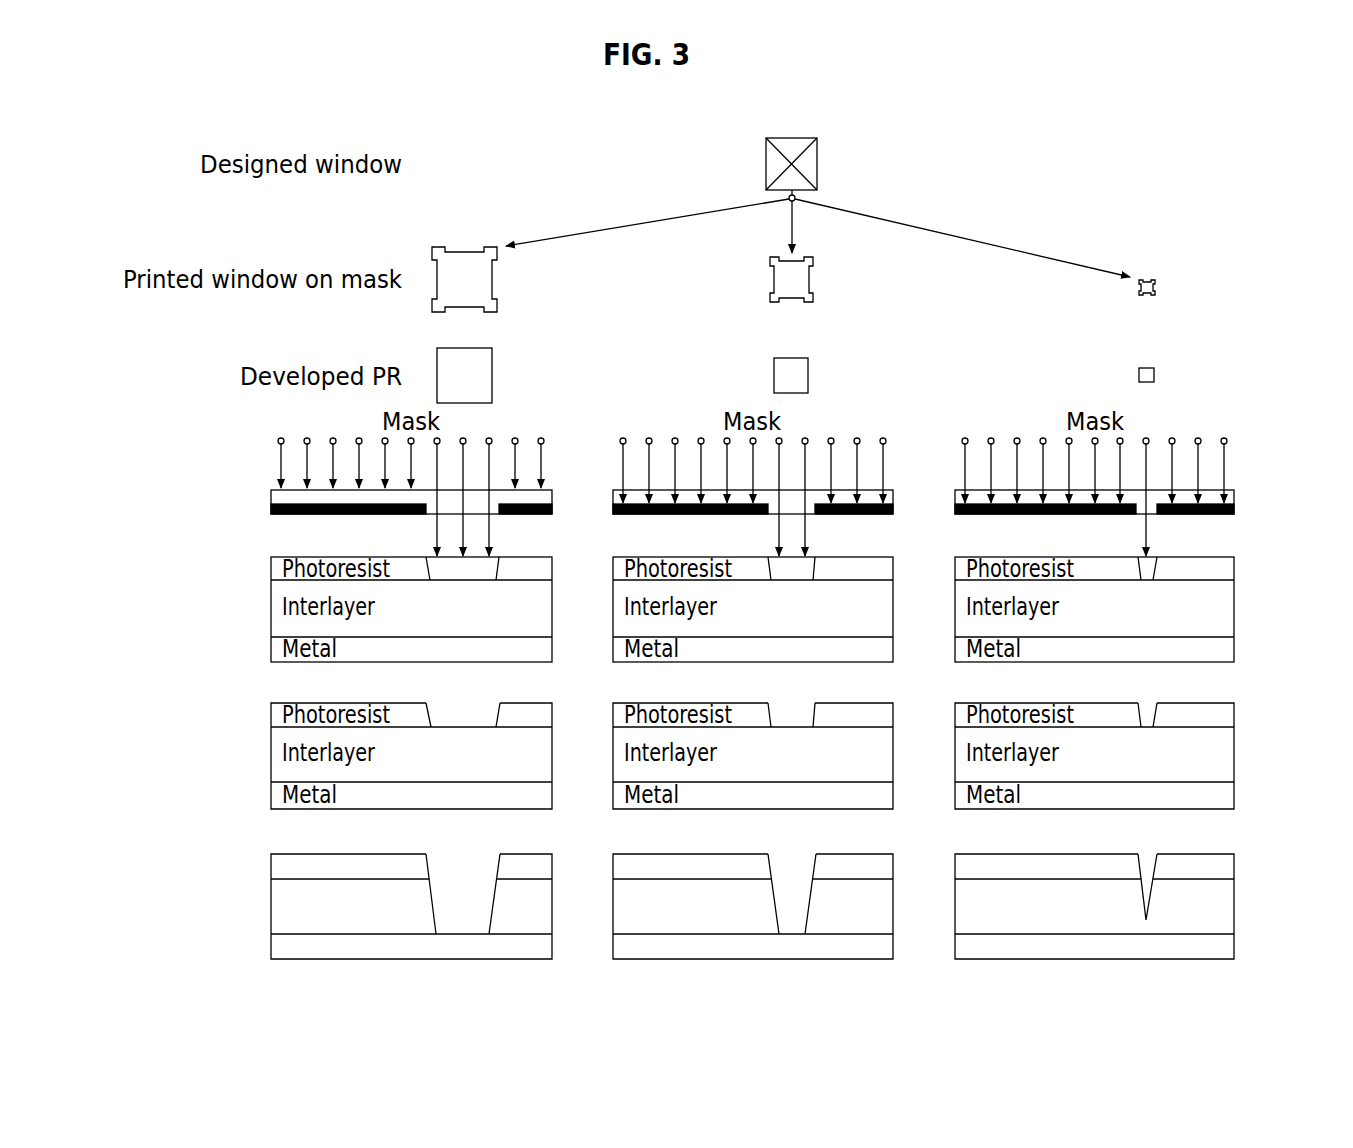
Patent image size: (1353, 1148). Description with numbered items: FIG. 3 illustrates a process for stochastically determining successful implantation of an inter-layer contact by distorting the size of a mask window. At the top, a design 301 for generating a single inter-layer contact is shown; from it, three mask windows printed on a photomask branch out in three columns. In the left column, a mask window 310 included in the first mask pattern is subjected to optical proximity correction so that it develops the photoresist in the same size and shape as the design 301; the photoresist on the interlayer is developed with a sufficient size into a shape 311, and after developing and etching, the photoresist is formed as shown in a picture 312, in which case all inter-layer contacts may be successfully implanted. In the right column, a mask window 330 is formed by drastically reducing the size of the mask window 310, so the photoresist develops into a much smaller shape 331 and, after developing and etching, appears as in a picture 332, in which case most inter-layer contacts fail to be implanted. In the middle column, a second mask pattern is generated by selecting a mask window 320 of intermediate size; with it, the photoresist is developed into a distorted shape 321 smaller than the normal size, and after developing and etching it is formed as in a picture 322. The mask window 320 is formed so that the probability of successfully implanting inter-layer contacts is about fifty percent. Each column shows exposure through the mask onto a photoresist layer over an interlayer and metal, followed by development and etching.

The design 301 is at (818, 160).
The mask window 310 is at (497, 280).
The mask window 320 is at (813, 280).
The mask window 330 is at (1155, 288).
The shape 311 is at (492, 376).
The distorted shape 321 is at (808, 375).
The shape 331 is at (1154, 375).
The picture 312 is at (533, 854).
The picture 322 is at (875, 854).
The picture 332 is at (1217, 854).